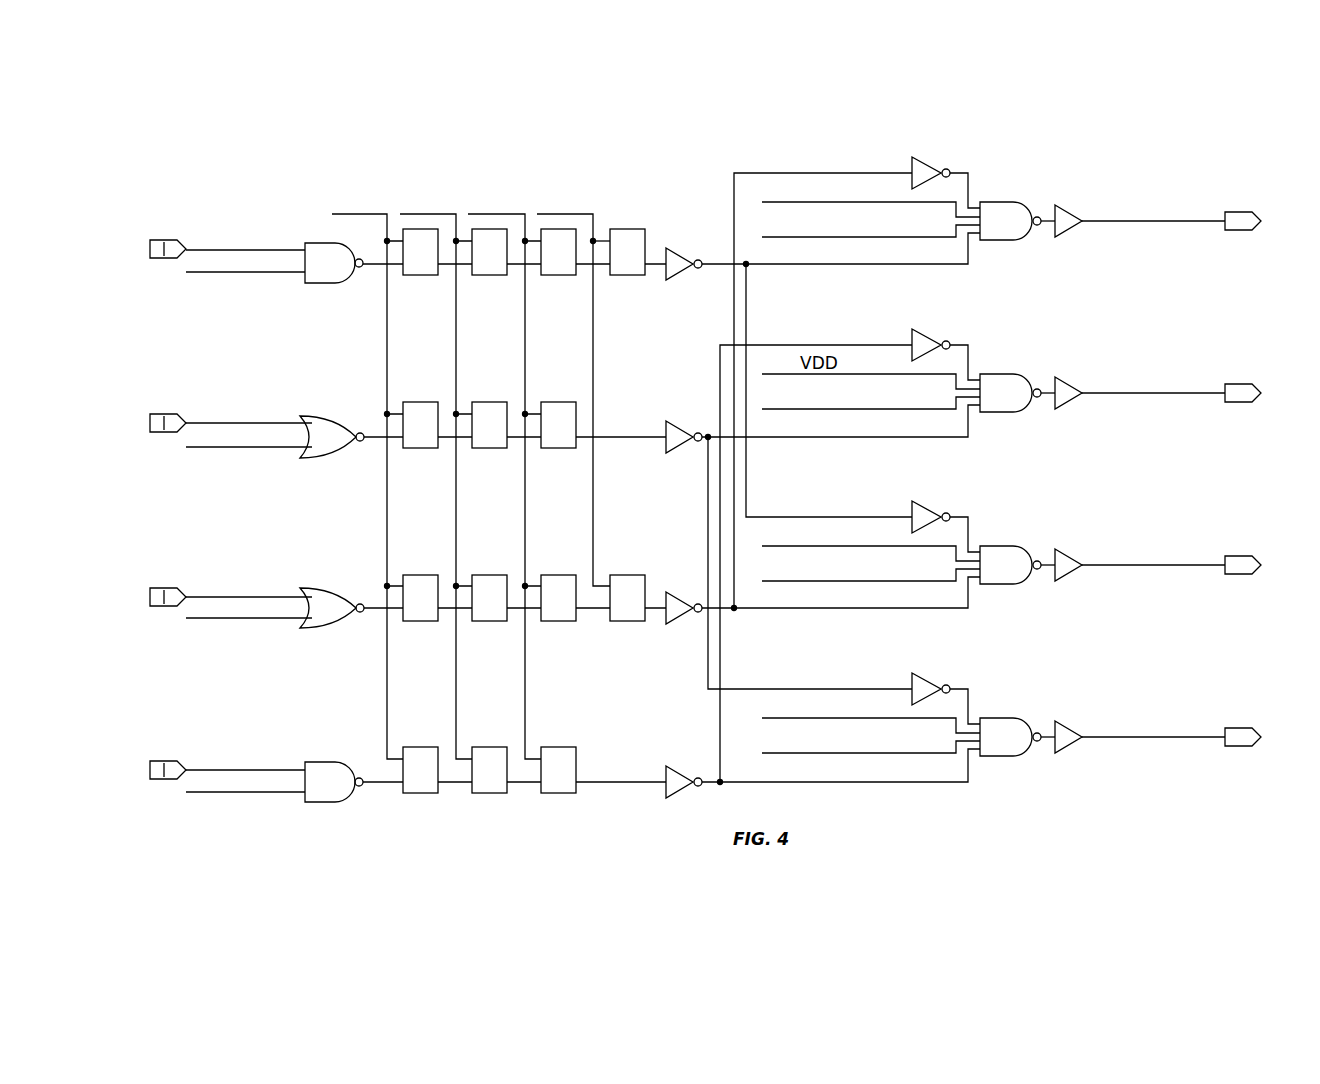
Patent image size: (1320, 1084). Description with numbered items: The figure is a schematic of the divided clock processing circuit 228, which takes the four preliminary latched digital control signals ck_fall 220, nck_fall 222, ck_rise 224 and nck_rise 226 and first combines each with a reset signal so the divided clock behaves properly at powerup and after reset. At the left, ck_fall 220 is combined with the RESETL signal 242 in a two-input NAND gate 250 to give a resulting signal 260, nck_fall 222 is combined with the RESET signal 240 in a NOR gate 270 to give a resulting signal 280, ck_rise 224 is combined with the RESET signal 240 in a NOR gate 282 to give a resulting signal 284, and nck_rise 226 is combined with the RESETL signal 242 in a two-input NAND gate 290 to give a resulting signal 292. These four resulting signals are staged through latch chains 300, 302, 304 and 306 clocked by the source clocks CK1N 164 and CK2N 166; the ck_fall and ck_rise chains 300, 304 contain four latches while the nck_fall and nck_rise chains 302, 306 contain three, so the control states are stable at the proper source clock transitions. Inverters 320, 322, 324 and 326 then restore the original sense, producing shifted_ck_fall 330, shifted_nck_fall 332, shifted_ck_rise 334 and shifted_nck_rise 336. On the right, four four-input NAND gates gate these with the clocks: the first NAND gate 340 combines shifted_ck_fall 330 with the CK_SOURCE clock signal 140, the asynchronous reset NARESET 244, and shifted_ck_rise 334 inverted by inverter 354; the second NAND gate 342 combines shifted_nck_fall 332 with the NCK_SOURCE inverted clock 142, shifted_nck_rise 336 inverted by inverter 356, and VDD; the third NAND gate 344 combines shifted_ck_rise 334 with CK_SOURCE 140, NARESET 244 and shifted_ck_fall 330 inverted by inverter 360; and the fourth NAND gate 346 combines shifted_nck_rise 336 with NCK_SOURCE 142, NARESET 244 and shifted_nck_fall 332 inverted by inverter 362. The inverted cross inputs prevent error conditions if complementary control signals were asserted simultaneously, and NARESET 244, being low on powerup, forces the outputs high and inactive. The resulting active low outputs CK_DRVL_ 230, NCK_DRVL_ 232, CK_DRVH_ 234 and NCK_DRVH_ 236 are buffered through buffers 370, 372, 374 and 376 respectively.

The divided clock processing circuit 228 is at (262, 166).
The CK1N source clock signal 164 is at (332, 214).
The CK2N source clock signal 166 is at (400, 214).
The ck_fall preliminary latched digital control signal 220 is at (272, 250).
The nck_fall preliminary latched digital control signal 222 is at (272, 423).
The ck_rise preliminary latched digital control signal 224 is at (272, 597).
The nck_rise preliminary latched digital control signal 226 is at (272, 770).
The RESETL signal 242 is at (270, 275).
The RESET signal 240 is at (270, 448).
The two-input NAND gate 250 is at (317, 284).
The NOR gate 270 is at (317, 458).
The NOR gate 282 is at (317, 629).
The two-input NAND gate 290 is at (317, 803).
The resulting signal 260 is at (371, 266).
The resulting signal 280 is at (371, 439).
The resulting signal 284 is at (371, 610).
The resulting signal 292 is at (371, 784).
The latch chain 300 is at (662, 239).
The latch chain 302 is at (602, 411).
The latch chain 304 is at (656, 581).
The latch chain 306 is at (589, 757).
The inverter 320 is at (676, 280).
The inverter 322 is at (676, 453).
The inverter 324 is at (676, 624).
The inverter 326 is at (676, 798).
The shifted_ck_fall signal 330 is at (830, 267).
The shifted_nck_fall signal 332 is at (830, 439).
The shifted_ck_rise signal 334 is at (830, 611).
The shifted_nck_rise signal 336 is at (830, 783).
The NARESET signal 244 is at (790, 199).
The CK_SOURCE clock signal 140 is at (790, 235).
The NCK_SOURCE inverted clock signal 142 is at (790, 407).
The inverter 354 is at (931, 170).
The inverter 356 is at (931, 342).
The inverter 360 is at (931, 514).
The inverter 362 is at (931, 686).
The first NAND gate 340 is at (1002, 242).
The second NAND gate 342 is at (1002, 414).
The third NAND gate 344 is at (1002, 586).
The fourth NAND gate 346 is at (1002, 758).
The buffer 370 is at (1068, 233).
The buffer 372 is at (1068, 405).
The buffer 374 is at (1068, 577).
The buffer 376 is at (1068, 749).
The CK_DRVL_ signal 230 is at (1207, 220).
The NCK_DRVL_ signal 232 is at (1207, 392).
The CK_DRVH_ signal 234 is at (1207, 564).
The NCK_DRVH_ signal 236 is at (1207, 736).